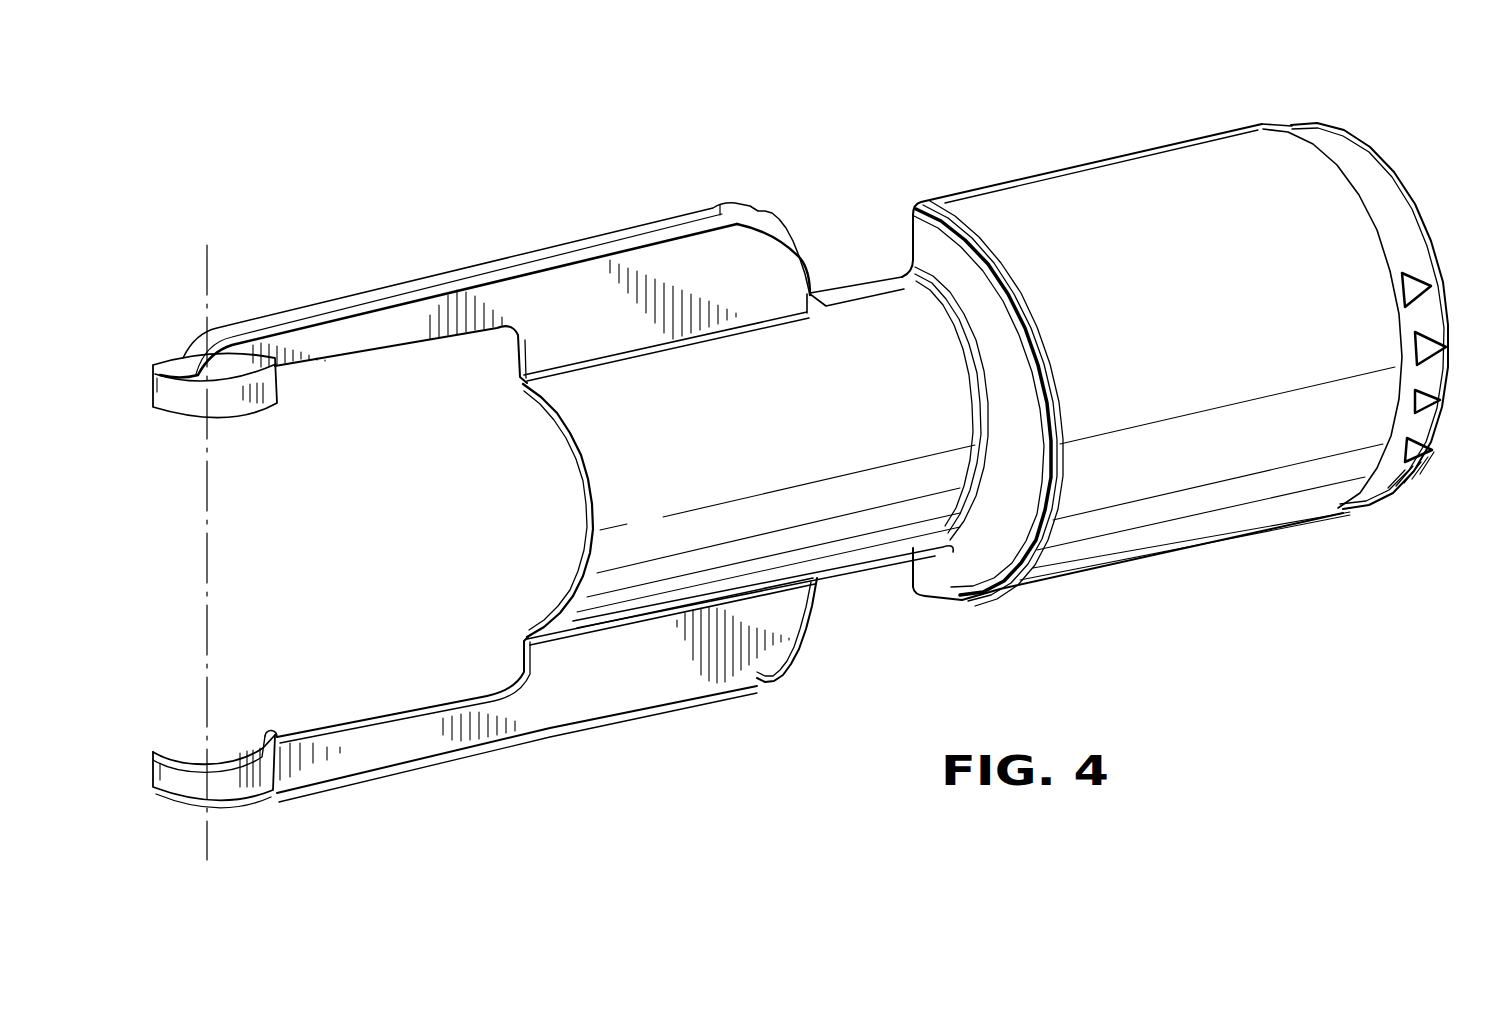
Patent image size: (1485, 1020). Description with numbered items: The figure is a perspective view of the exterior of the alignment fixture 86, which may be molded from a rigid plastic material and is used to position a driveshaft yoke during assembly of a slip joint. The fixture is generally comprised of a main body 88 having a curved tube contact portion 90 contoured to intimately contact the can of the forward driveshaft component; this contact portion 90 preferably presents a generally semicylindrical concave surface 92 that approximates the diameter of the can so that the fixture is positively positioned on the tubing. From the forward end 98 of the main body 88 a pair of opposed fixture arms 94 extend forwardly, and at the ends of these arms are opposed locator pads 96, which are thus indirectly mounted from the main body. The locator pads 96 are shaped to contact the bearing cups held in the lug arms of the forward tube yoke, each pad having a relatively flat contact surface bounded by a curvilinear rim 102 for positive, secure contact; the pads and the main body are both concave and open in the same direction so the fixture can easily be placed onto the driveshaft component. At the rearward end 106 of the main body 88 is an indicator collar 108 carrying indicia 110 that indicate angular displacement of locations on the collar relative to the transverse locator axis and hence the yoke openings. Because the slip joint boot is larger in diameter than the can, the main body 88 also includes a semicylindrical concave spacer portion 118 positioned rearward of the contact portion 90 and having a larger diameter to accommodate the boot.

The alignment fixture 86 is at (497, 812).
The main body 88 is at (1228, 75).
The tube contact portion 90 is at (970, 672).
The semicylindrical concave surface 92 is at (857, 290).
The fixture arms 94 is at (404, 348).
The locator pads 96 is at (272, 414).
The forward end 98 is at (575, 597).
The curvilinear rim 102 is at (222, 414).
The rearward end 106 is at (1262, 125).
The indicator collar 108 is at (1383, 168).
The indicia 110 is at (1420, 392).
The spacer portion 118 is at (1385, 538).